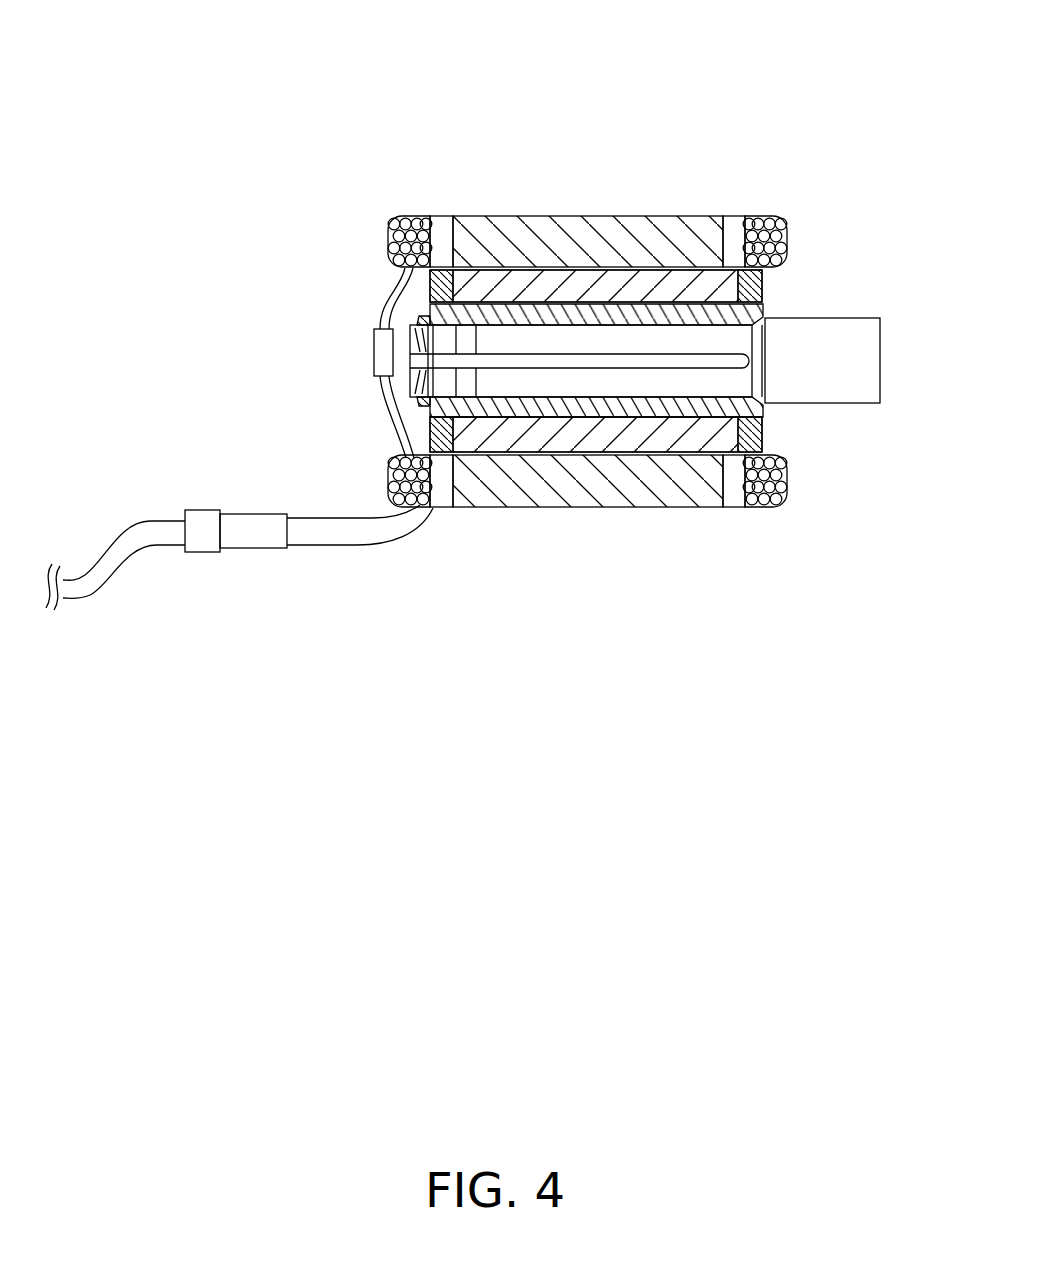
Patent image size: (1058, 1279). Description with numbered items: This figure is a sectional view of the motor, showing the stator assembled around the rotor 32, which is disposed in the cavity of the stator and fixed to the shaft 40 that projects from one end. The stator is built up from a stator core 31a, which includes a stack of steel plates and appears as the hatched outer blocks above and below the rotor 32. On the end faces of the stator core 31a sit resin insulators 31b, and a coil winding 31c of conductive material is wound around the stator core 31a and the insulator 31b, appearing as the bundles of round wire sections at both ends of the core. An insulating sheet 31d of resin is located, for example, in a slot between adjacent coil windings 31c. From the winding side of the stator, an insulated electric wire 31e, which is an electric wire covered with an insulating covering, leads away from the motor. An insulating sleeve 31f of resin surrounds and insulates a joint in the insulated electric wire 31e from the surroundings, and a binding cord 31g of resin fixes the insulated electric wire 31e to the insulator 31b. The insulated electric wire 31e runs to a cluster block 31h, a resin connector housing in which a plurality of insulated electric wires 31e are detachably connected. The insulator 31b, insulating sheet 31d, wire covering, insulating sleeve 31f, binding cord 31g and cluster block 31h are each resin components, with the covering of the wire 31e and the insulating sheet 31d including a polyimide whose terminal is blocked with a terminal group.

The stator core 31a is at (500, 247).
The insulator 31b is at (442, 235).
The coil winding 31c is at (413, 228).
The insulating sheet 31d is at (690, 247).
The insulated electric wire 31e is at (400, 436).
The insulating sleeve 31f is at (382, 348).
The binding cord 31g is at (383, 235).
The cluster block 31h is at (255, 533).
The rotor 32 is at (613, 290).
The shaft 40 is at (840, 353).